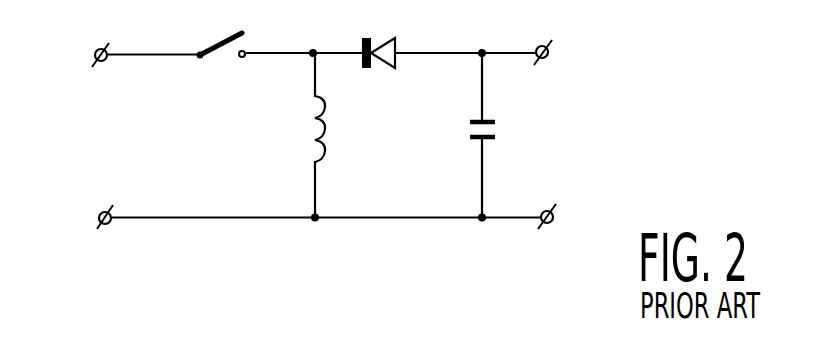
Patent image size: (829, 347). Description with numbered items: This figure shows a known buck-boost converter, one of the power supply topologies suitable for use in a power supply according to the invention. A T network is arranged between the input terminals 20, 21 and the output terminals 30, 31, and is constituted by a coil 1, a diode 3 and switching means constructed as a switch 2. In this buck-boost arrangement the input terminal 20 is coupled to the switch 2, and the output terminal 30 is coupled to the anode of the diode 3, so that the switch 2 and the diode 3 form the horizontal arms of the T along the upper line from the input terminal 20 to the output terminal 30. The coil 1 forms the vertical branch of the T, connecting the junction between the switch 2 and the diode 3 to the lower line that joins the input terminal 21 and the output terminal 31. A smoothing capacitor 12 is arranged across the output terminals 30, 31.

The coil 1 is at (325, 127).
The switch 2 is at (229, 33).
The diode 3 is at (383, 37).
The smoothing capacitor 12 is at (497, 130).
The input terminal 20 is at (95, 48).
The input terminal 21 is at (97, 208).
The output terminal 30 is at (551, 41).
The output terminal 31 is at (557, 207).